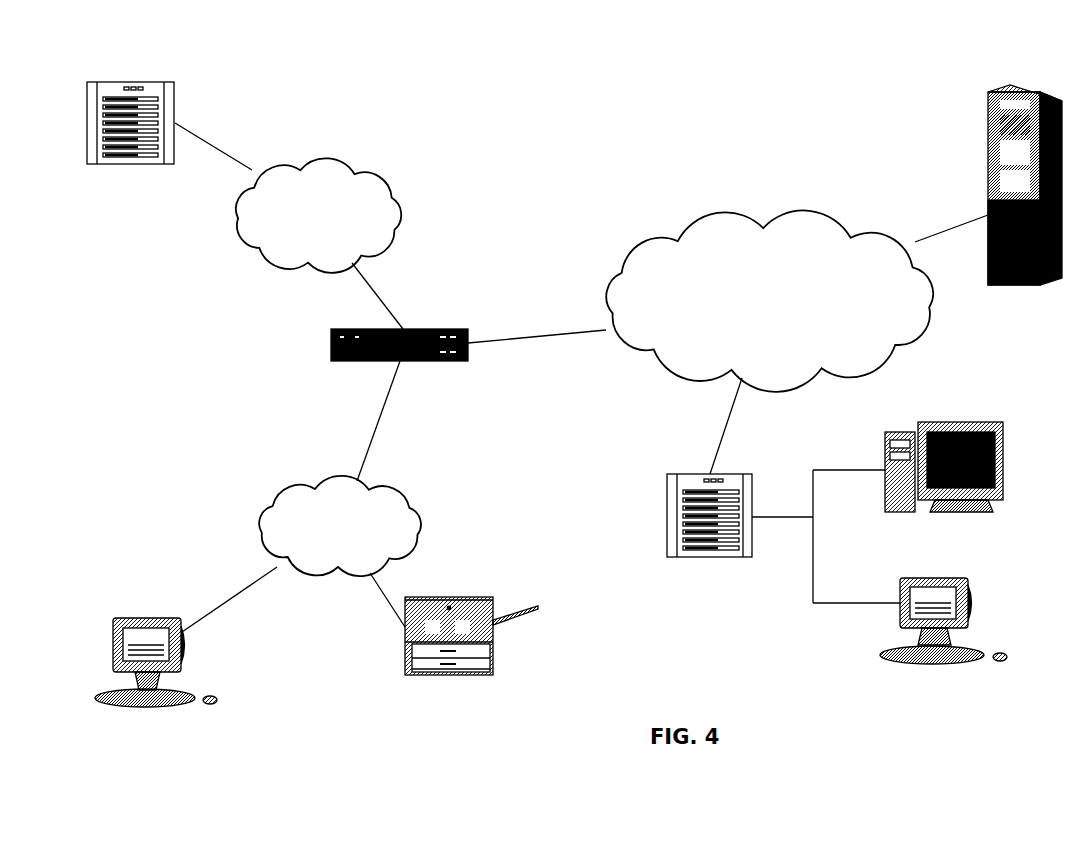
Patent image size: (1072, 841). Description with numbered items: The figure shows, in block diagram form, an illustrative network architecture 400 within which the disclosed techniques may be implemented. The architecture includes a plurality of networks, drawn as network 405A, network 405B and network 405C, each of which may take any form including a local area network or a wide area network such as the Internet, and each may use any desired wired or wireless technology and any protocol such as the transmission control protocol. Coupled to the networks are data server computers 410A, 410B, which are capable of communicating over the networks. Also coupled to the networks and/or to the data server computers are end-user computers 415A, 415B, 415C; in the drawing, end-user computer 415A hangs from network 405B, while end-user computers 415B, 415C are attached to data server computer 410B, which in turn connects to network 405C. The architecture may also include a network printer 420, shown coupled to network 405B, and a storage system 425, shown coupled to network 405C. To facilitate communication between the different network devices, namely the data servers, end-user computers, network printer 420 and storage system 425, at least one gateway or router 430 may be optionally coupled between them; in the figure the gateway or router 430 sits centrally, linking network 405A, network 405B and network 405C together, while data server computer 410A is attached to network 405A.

The network architecture 400 is at (562, 80).
The network 405A is at (385, 172).
The network 405B is at (262, 484).
The network 405C is at (641, 238).
The data server computer 410A is at (174, 110).
The data server computer 410B is at (667, 485).
The end-user computer 415A is at (167, 707).
The end-user computer 415B is at (1001, 422).
The end-user computer 415C is at (968, 580).
The network printer 420 is at (470, 675).
The storage system 425 is at (988, 162).
The gateway or router 430 is at (457, 327).